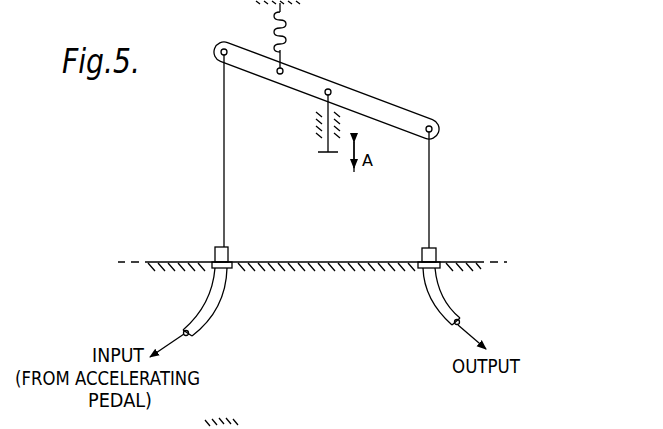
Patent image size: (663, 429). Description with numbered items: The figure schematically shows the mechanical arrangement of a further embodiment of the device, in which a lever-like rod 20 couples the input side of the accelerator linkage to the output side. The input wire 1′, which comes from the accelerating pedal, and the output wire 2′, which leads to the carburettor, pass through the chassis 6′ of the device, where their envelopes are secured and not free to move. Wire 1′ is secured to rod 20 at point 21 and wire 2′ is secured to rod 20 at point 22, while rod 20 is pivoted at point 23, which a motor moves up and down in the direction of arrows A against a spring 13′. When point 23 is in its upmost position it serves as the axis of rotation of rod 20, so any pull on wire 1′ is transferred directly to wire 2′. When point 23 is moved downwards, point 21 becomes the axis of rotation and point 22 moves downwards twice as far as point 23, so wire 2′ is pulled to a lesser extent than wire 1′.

The rod 20 is at (322, 78).
The point 21 is at (223, 41).
The point 22 is at (434, 118).
The pivot point 23 is at (333, 91).
The spring 13′ is at (292, 37).
The wire 1′ is at (222, 162).
The wire 2′ is at (431, 201).
The chassis of the device 6′ is at (306, 261).